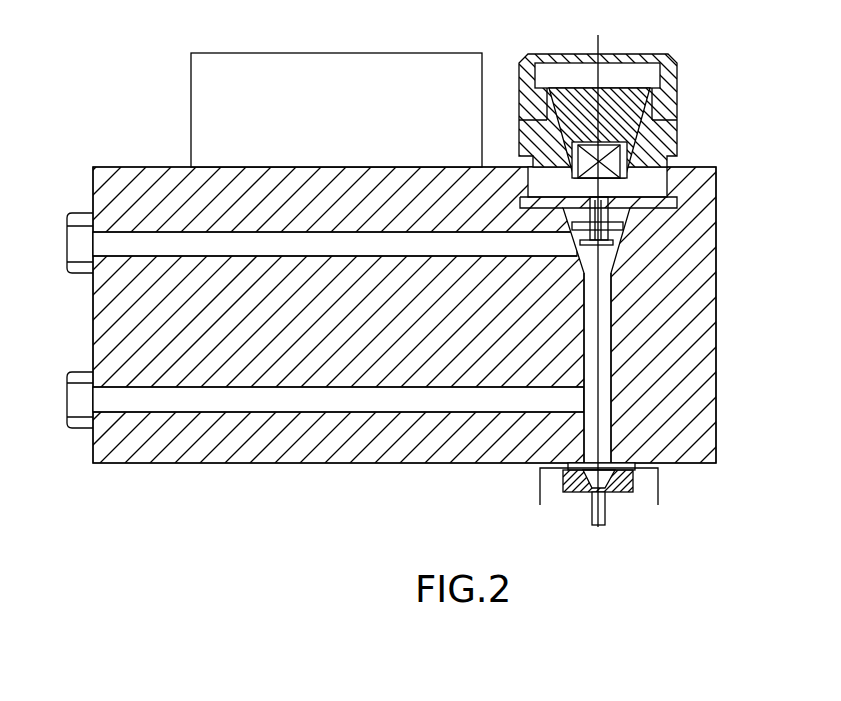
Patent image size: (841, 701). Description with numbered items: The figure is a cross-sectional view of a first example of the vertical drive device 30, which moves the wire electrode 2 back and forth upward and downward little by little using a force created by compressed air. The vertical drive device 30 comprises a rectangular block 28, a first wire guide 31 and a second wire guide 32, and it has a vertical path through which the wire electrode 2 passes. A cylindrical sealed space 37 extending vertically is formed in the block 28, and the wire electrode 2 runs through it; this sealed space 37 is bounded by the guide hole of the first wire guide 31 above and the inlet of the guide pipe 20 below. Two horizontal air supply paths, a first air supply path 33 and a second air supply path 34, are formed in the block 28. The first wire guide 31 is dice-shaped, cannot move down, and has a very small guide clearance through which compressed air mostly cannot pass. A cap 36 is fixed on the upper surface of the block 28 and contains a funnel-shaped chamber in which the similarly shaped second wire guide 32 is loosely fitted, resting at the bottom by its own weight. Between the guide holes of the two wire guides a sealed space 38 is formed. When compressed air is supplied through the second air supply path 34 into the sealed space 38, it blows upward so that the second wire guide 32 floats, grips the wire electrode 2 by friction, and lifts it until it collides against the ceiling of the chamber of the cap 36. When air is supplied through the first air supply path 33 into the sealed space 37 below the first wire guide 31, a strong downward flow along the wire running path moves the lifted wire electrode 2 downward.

The wire electrode 2 is at (602, 45).
The guide pipe 20 is at (605, 505).
The rectangular block 28 is at (415, 448).
The vertical drive device 30 is at (786, 174).
The first wire guide 31 is at (628, 208).
The second wire guide 32 is at (614, 167).
The first air supply path 33 is at (295, 408).
The second air supply path 34 is at (202, 235).
The cap 36 is at (677, 73).
The sealed space 37 is at (612, 395).
The sealed space 38 is at (607, 213).